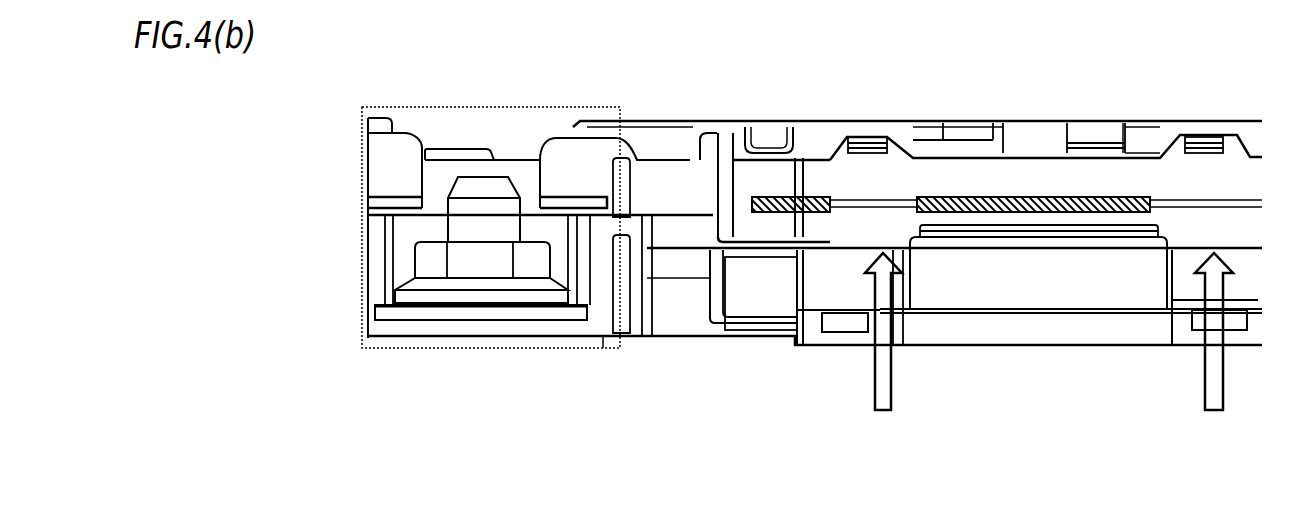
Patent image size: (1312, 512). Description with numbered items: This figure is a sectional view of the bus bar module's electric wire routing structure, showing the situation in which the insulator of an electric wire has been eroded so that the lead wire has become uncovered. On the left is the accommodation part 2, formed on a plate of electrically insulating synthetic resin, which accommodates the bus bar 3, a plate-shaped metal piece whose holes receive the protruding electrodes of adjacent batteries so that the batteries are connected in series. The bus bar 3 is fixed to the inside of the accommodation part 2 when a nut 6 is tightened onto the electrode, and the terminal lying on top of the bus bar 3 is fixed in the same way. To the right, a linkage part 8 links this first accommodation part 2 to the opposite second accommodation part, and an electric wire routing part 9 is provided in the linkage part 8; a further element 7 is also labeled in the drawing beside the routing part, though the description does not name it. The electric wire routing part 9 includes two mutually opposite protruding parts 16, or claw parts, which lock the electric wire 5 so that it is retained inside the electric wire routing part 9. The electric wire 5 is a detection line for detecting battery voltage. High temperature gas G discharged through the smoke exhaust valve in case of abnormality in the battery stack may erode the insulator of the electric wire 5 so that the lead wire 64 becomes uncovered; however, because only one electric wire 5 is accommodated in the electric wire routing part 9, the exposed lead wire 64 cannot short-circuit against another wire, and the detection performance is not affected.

The accommodation part 2 is at (356, 183).
The bus bar 3 is at (460, 312).
The nut 6 is at (470, 265).
The connector housing 7 is at (763, 180).
The lead wire 64 is at (865, 196).
The protruding part 16 is at (872, 135).
The electric wire 5 is at (1035, 177).
The electric wire routing part 9 is at (1110, 197).
The linkage part 8 is at (1293, 357).